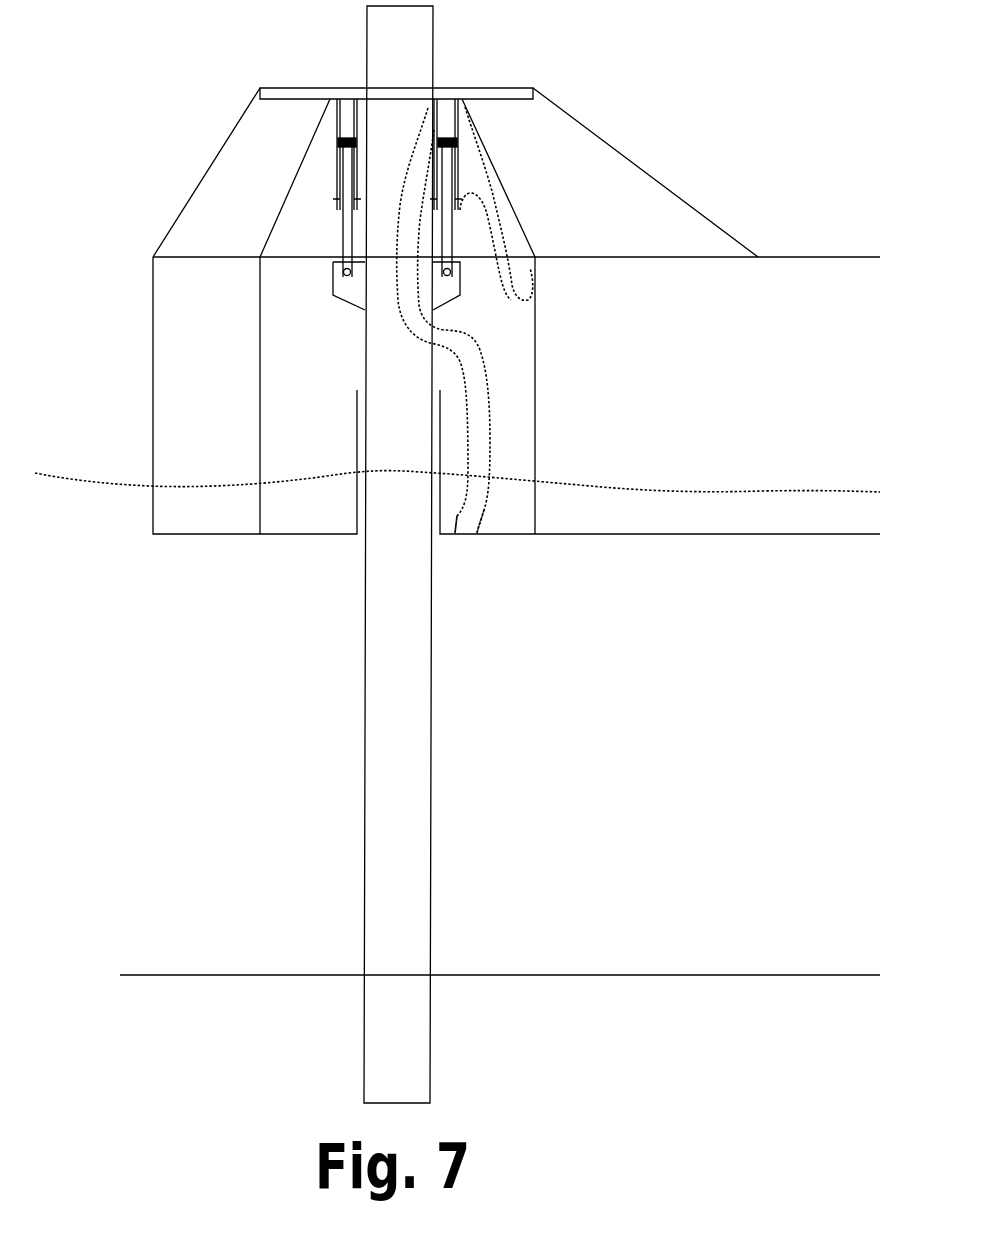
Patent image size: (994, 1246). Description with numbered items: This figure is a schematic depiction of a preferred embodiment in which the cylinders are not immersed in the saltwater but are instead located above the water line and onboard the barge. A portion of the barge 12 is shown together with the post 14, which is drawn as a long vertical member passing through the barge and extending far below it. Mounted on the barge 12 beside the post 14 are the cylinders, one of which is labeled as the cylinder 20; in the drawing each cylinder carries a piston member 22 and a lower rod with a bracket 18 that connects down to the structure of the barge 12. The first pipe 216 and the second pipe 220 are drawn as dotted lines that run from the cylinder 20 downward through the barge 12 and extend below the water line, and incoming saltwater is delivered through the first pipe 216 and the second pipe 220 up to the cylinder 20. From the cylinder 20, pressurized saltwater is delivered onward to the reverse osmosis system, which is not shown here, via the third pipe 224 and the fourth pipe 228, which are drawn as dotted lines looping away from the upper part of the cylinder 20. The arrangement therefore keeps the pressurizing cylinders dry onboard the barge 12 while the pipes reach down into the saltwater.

The barge 12 is at (741, 347).
The post 14 is at (420, 49).
The piston rod and bracket 18 is at (452, 237).
The cylinder 20 is at (462, 120).
The piston 22 is at (458, 146).
The first pipe 216 is at (458, 512).
The second pipe 220 is at (490, 438).
The third pipe 224 is at (476, 182).
The fourth pipe 228 is at (499, 255).